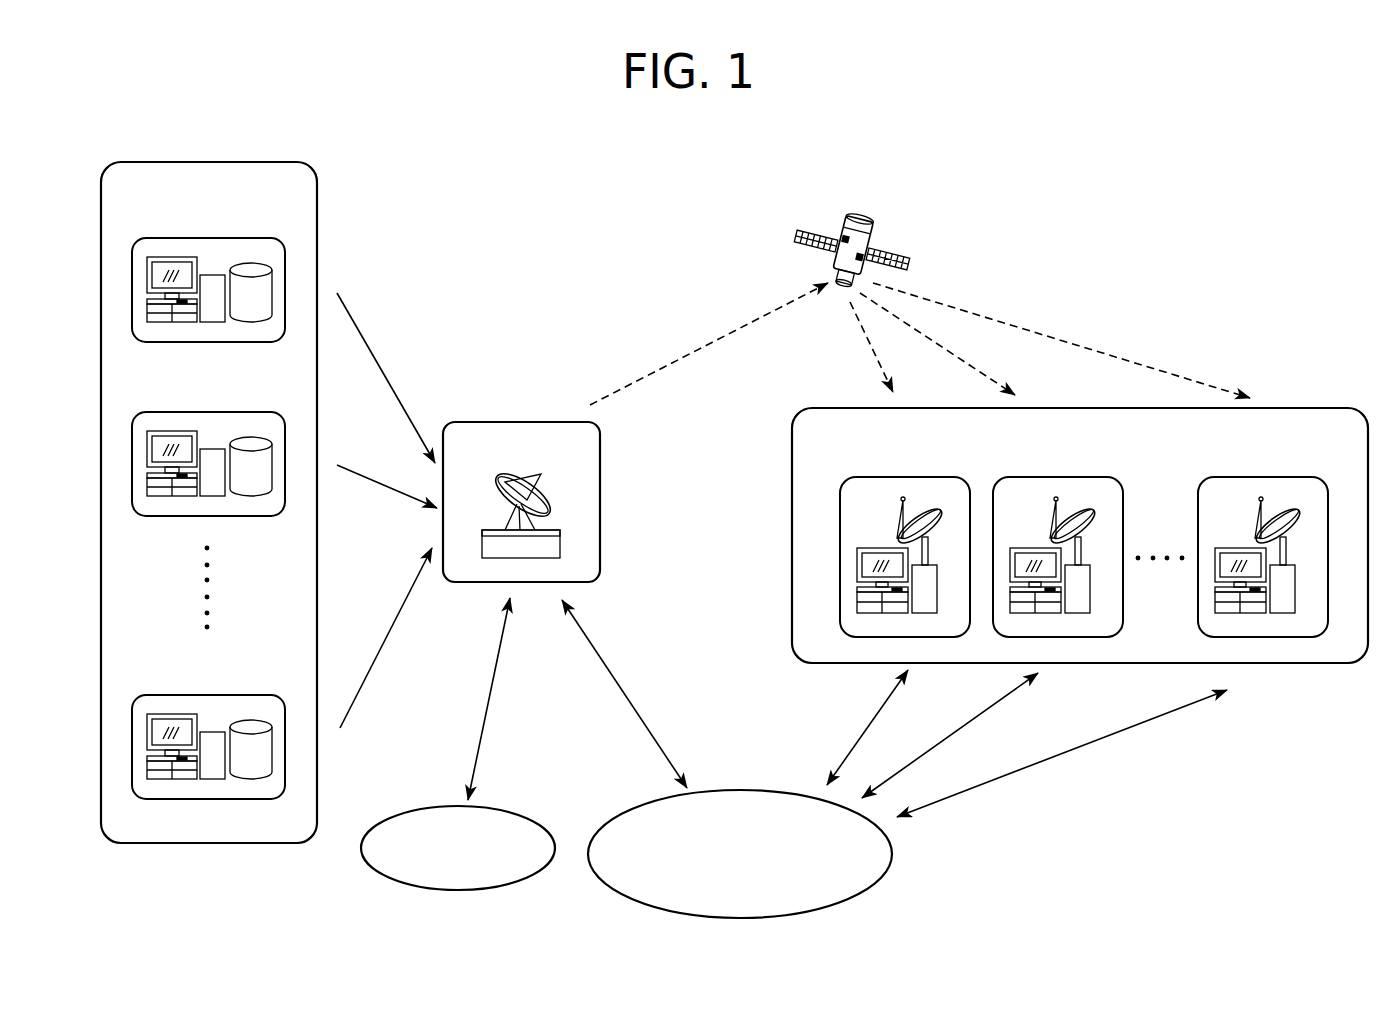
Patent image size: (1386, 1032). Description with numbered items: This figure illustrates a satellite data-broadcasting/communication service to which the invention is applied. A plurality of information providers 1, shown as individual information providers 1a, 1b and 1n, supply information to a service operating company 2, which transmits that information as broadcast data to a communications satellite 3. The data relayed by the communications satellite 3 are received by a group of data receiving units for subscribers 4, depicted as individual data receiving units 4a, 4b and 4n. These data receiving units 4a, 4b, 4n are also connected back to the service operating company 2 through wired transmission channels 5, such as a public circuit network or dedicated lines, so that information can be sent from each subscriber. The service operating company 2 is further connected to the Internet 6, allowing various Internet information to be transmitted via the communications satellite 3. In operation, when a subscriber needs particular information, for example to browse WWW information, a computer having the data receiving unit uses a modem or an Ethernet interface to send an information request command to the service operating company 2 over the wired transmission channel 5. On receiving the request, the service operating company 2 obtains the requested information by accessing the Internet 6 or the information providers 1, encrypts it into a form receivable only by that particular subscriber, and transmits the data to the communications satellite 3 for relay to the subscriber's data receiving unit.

The information providers 1 is at (201, 162).
The information provider 1a is at (259, 238).
The information provider 1b is at (259, 412).
The information provider 1n is at (259, 695).
The service operating company 2 is at (466, 420).
The communications satellite 3 is at (865, 222).
The data receiving units for subscribers 4 is at (1332, 406).
The data receiving unit for subscriber 4a is at (912, 477).
The data receiving unit for subscriber 4b is at (1065, 477).
The data receiving unit for subscriber 4n is at (1272, 477).
The wired transmission channels 5 is at (750, 790).
The Internet 6 is at (429, 806).